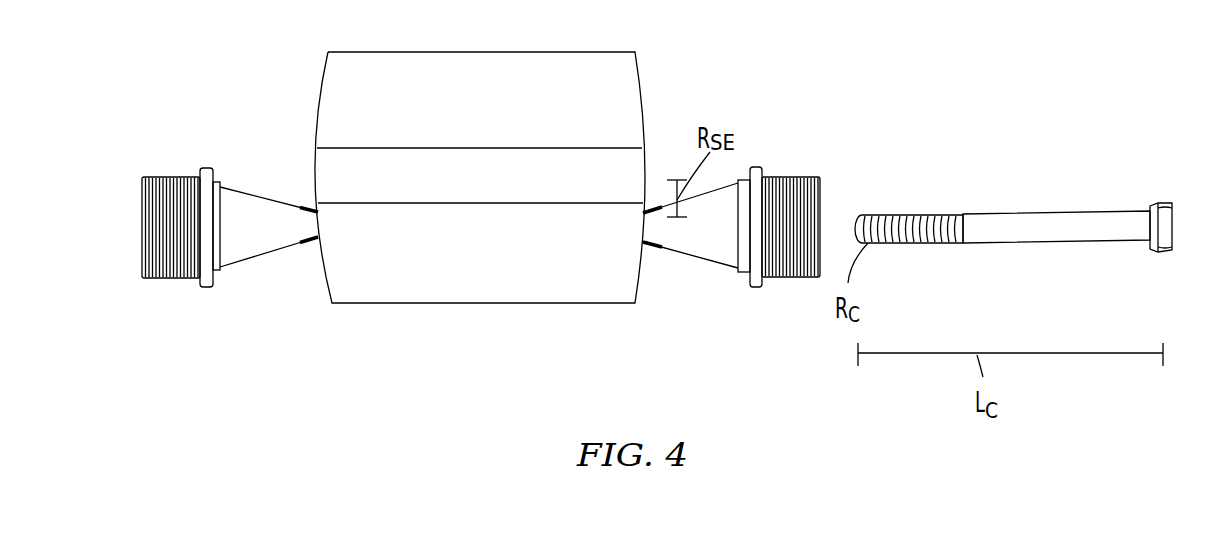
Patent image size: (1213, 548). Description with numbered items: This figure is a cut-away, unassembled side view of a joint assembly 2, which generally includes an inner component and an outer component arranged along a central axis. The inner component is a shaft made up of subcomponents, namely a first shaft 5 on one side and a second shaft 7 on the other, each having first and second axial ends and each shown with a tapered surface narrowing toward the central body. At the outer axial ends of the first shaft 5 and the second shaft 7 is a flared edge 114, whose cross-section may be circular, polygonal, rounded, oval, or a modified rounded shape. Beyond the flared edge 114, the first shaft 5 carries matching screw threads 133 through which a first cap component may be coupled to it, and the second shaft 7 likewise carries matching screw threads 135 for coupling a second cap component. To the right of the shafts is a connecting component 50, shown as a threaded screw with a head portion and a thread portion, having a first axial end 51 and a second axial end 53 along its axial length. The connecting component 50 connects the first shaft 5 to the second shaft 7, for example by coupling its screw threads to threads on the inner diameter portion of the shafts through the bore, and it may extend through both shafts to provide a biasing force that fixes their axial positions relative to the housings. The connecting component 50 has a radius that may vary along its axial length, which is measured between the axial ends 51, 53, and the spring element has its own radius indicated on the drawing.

The joint assembly 2 is at (1130, 86).
The first shaft 5 is at (242, 267).
The second shaft 7 is at (725, 267).
The connecting component 50 is at (1011, 238).
The first axial end 51 is at (1165, 203).
The second axial end 53 is at (857, 213).
The flared edge 114 is at (207, 165).
The matching screw threads 133 is at (160, 178).
The matching screw threads 135 is at (808, 175).